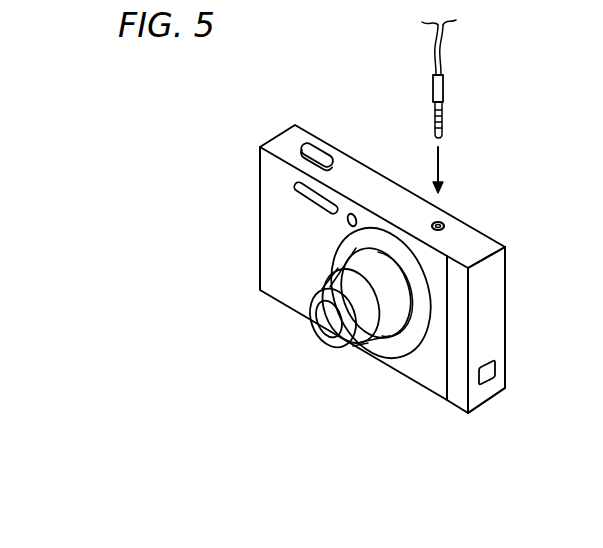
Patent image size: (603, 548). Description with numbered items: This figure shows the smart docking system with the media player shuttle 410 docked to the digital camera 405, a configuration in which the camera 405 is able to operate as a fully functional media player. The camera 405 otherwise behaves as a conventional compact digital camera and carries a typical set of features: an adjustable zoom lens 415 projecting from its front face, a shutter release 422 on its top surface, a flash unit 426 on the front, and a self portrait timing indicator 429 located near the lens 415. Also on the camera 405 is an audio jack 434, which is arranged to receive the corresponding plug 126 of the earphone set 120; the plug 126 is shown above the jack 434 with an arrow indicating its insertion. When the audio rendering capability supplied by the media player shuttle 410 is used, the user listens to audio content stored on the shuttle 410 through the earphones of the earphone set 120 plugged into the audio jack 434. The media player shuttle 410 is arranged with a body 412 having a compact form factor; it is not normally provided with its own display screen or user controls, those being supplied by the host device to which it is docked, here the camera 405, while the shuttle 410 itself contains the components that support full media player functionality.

The earphone set 120 is at (443, 33).
The plug 126 is at (443, 90).
The digital camera 405 is at (363, 161).
The media player shuttle 410 is at (507, 270).
The body 412 is at (487, 328).
The adjustable zoom lens 415 is at (313, 305).
The shutter release 422 is at (315, 152).
The flash unit 426 is at (307, 193).
The self portrait timing indicator 429 is at (347, 222).
The audio jack 434 is at (445, 223).